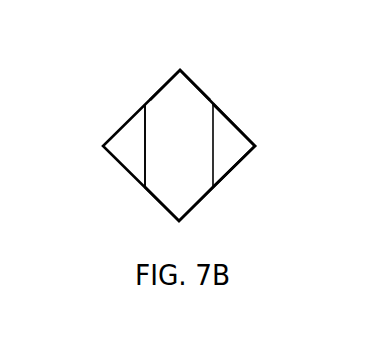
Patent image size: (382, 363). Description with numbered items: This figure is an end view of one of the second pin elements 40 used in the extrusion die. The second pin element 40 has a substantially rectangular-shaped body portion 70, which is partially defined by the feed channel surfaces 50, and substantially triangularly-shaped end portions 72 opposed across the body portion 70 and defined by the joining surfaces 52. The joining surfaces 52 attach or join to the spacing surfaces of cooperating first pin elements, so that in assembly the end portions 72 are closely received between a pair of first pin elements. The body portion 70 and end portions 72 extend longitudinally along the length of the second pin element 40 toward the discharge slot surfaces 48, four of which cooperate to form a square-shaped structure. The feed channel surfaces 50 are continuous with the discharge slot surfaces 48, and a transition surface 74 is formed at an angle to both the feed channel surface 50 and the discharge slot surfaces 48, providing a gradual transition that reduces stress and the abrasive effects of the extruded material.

The second pin element 40 is at (116, 88).
The discharge slot surface 48 is at (123, 128).
The feed channel surface 50 is at (213, 132).
The joining surface 52 is at (193, 80).
The body portion 70 is at (173, 172).
The end portion 72 is at (172, 103).
The transition surface 74 is at (228, 153).